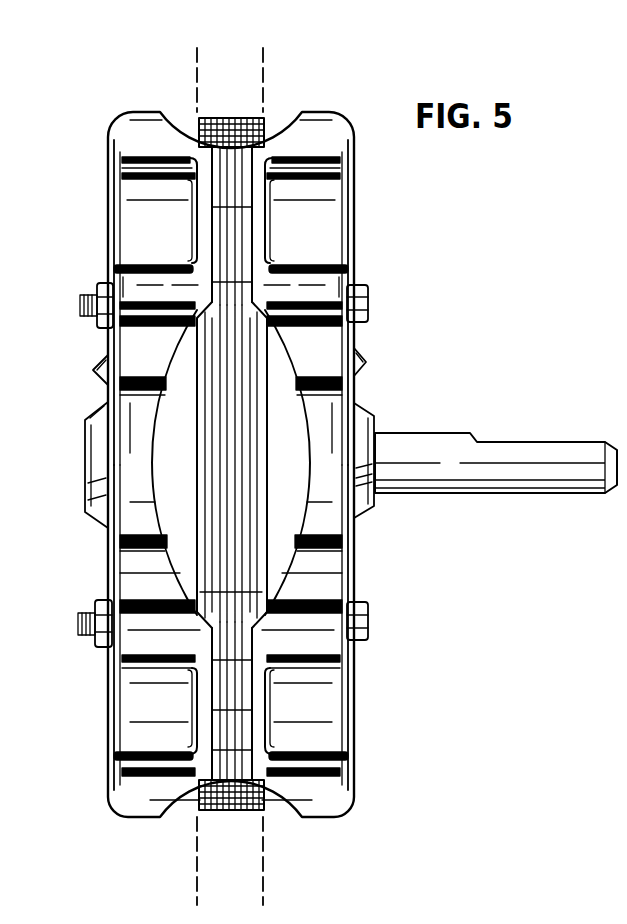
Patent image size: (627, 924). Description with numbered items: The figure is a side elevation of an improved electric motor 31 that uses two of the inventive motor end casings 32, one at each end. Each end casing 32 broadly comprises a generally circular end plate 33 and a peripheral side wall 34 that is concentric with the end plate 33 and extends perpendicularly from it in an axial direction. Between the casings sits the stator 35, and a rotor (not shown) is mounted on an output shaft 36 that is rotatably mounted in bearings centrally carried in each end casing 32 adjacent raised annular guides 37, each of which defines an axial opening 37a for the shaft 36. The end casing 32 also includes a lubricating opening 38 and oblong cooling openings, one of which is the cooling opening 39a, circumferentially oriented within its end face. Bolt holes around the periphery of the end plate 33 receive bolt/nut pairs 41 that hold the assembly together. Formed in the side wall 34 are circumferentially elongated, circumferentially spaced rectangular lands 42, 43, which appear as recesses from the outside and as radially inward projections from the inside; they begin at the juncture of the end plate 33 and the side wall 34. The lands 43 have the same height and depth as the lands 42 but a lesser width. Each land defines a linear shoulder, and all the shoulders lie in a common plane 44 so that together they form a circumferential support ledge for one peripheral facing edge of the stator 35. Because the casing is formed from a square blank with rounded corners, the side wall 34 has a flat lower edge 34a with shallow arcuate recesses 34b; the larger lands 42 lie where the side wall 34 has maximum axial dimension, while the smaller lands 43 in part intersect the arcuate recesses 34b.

The motor 31 is at (103, 108).
The motor end casing 32 is at (103, 211).
The circular end plate 33 is at (357, 722).
The peripheral side wall 34 is at (321, 112).
The flat lower edge 34a is at (210, 718).
The shallow arcuate recess 34b is at (356, 512).
The stator 35 is at (231, 118).
The output shaft 36 is at (539, 433).
The raised annular guide 37 is at (97, 408).
The axial opening 37a is at (88, 486).
The lubricating opening 38 is at (364, 365).
The oblong cooling opening 39a is at (599, 556).
The bolt/nut pair 41 is at (370, 300).
The rectangular land 42 is at (128, 236).
The rectangular land 43 is at (128, 348).
The plane of the shoulders 44 is at (197, 99).